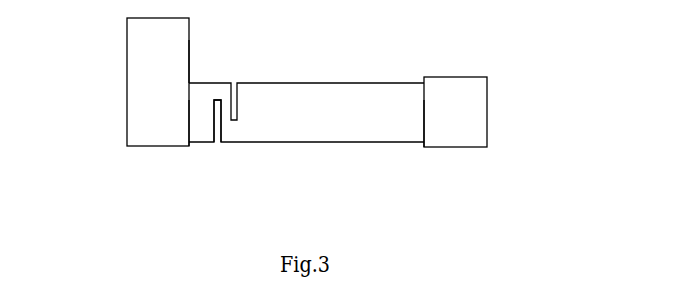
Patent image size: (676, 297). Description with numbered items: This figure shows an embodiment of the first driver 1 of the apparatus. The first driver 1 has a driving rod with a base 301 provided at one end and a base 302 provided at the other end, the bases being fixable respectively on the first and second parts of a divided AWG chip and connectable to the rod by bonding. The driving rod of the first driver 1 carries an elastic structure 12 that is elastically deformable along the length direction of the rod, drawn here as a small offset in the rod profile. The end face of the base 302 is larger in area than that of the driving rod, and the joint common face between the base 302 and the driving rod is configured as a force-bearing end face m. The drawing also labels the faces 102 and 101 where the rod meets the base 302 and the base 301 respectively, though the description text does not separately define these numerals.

The first driver 1 is at (310, 127).
The base 302 is at (43, 58).
The base 301 is at (450, 101).
The force-bearing end face m is at (190, 60).
The shoulder face of left block 102 is at (189, 112).
The elastic structure 12 is at (226, 112).
The shoulder face of right block 101 is at (424, 117).